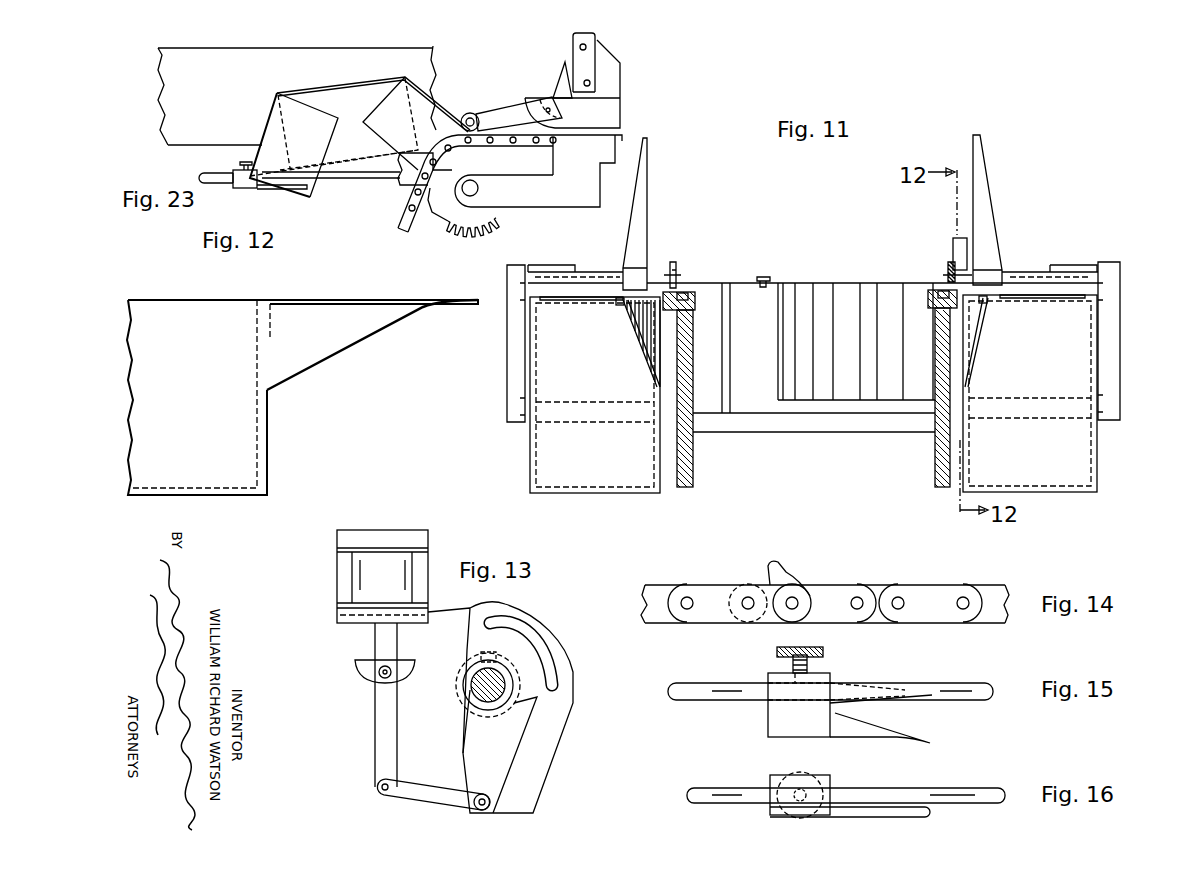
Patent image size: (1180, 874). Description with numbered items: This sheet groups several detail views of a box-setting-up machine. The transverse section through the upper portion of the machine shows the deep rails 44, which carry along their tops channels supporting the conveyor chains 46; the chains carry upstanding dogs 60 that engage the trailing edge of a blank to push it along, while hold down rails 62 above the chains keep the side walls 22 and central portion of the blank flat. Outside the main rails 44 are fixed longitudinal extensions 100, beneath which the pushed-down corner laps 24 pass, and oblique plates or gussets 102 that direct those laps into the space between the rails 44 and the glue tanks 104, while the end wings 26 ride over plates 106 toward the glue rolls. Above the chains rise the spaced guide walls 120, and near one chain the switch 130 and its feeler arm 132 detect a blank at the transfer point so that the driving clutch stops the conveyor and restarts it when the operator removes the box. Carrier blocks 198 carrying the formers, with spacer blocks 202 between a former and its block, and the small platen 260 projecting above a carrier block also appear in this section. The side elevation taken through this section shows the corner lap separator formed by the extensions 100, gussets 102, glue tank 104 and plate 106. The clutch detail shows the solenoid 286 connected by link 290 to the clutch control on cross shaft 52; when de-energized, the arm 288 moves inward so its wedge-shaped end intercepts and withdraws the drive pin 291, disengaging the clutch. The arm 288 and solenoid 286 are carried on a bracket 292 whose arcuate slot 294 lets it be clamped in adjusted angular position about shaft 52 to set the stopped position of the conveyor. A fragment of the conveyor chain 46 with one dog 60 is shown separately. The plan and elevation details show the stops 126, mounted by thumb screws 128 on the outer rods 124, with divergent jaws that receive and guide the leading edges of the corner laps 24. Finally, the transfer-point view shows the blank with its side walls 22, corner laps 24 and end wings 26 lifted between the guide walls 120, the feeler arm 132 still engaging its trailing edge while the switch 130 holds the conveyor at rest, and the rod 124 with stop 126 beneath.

In FIG. 23, the longitudinal side walls 22 is at (446, 98).
In FIG. 23, the corner laps 24 is at (396, 174).
In FIG. 23, the end wings 26 is at (342, 100).
In FIG. 11, the deep rails 44 is at (694, 461).
In FIG. 14, the conveyor chains 46 is at (656, 585).
In FIG. 13, the cross shaft 52 is at (470, 698).
In FIG. 23, the upstanding dogs 60 is at (469, 147).
In FIG. 14, the upstanding dogs 60 is at (784, 576).
In FIG. 23, the hold down rails 62 is at (606, 118).
In FIG. 11, the hold down rails 62 is at (673, 265).
In FIG. 12, the fixed longitudinal extensions 100 is at (465, 300).
In FIG. 11, the fixed longitudinal extensions 100 is at (619, 306).
In FIG. 12, the oblique plates or gussets 102 is at (335, 352).
In FIG. 11, the oblique plates or gussets 102 is at (641, 341).
In FIG. 12, the glue tanks 104 is at (271, 465).
In FIG. 11, the glue tanks 104 is at (530, 459).
In FIG. 12, the plates 106 is at (300, 300).
In FIG. 11, the plates 106 is at (583, 301).
In FIG. 23, the guide walls 120 is at (220, 79).
In FIG. 11, the guide walls 120 is at (650, 207).
In FIG. 23, the outer rods 124 is at (216, 175).
In FIG. 15, the outer rods 124 is at (895, 684).
In FIG. 16, the outer rods 124 is at (914, 791).
In FIG. 23, the stops 126 is at (246, 189).
In FIG. 15, the stops 126 is at (832, 731).
In FIG. 15, the thumb screws 128 is at (825, 651).
In FIG. 23, the switch 130 is at (573, 50).
In FIG. 11, the switch 130 is at (954, 238).
In FIG. 23, the feeler arm 132 is at (493, 114).
In FIG. 11, the carrier blocks 198 is at (741, 283).
In FIG. 11, the spacer blocks 202 is at (843, 283).
In FIG. 11, the small platen 260 is at (769, 279).
In FIG. 13, the solenoid 286 is at (337, 581).
In FIG. 13, the arm 288 is at (519, 723).
In FIG. 13, the link 290 is at (375, 729).
In FIG. 13, the drive pin 291 is at (480, 655).
In FIG. 13, the bracket 292 is at (556, 723).
In FIG. 13, the arcuate slot 294 is at (549, 657).